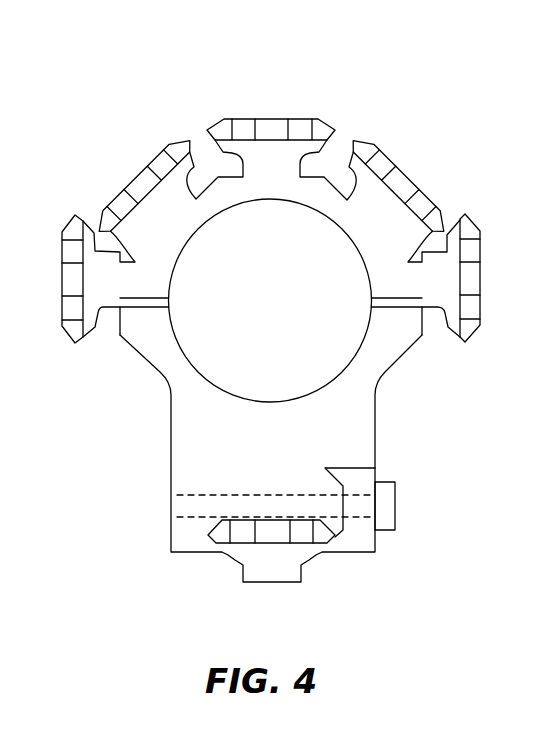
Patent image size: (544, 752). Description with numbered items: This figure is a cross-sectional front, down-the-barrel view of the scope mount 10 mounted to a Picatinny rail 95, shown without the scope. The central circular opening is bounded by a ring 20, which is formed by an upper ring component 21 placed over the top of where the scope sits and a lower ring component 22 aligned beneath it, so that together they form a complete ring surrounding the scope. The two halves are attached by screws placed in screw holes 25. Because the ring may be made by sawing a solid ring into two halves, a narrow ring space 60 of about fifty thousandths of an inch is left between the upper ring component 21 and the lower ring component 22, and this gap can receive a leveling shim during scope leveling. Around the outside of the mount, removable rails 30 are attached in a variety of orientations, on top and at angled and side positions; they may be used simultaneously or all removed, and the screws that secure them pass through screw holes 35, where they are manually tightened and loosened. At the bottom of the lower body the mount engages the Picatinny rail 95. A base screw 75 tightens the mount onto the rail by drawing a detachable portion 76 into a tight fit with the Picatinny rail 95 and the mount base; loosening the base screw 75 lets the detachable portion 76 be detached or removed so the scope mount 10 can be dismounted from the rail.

The scope mount 10 is at (450, 127).
The ring 20 is at (80, 95).
The upper ring component 21 is at (375, 247).
The lower ring component 22 is at (365, 390).
The screw hole 25 is at (108, 240).
The removable rail 30 is at (240, 124).
The screw hole 35 is at (277, 124).
The ring space 60 is at (150, 305).
The base screw 75 is at (383, 503).
The detachable portion 76 is at (362, 481).
The Picatinny rail 95 is at (305, 556).